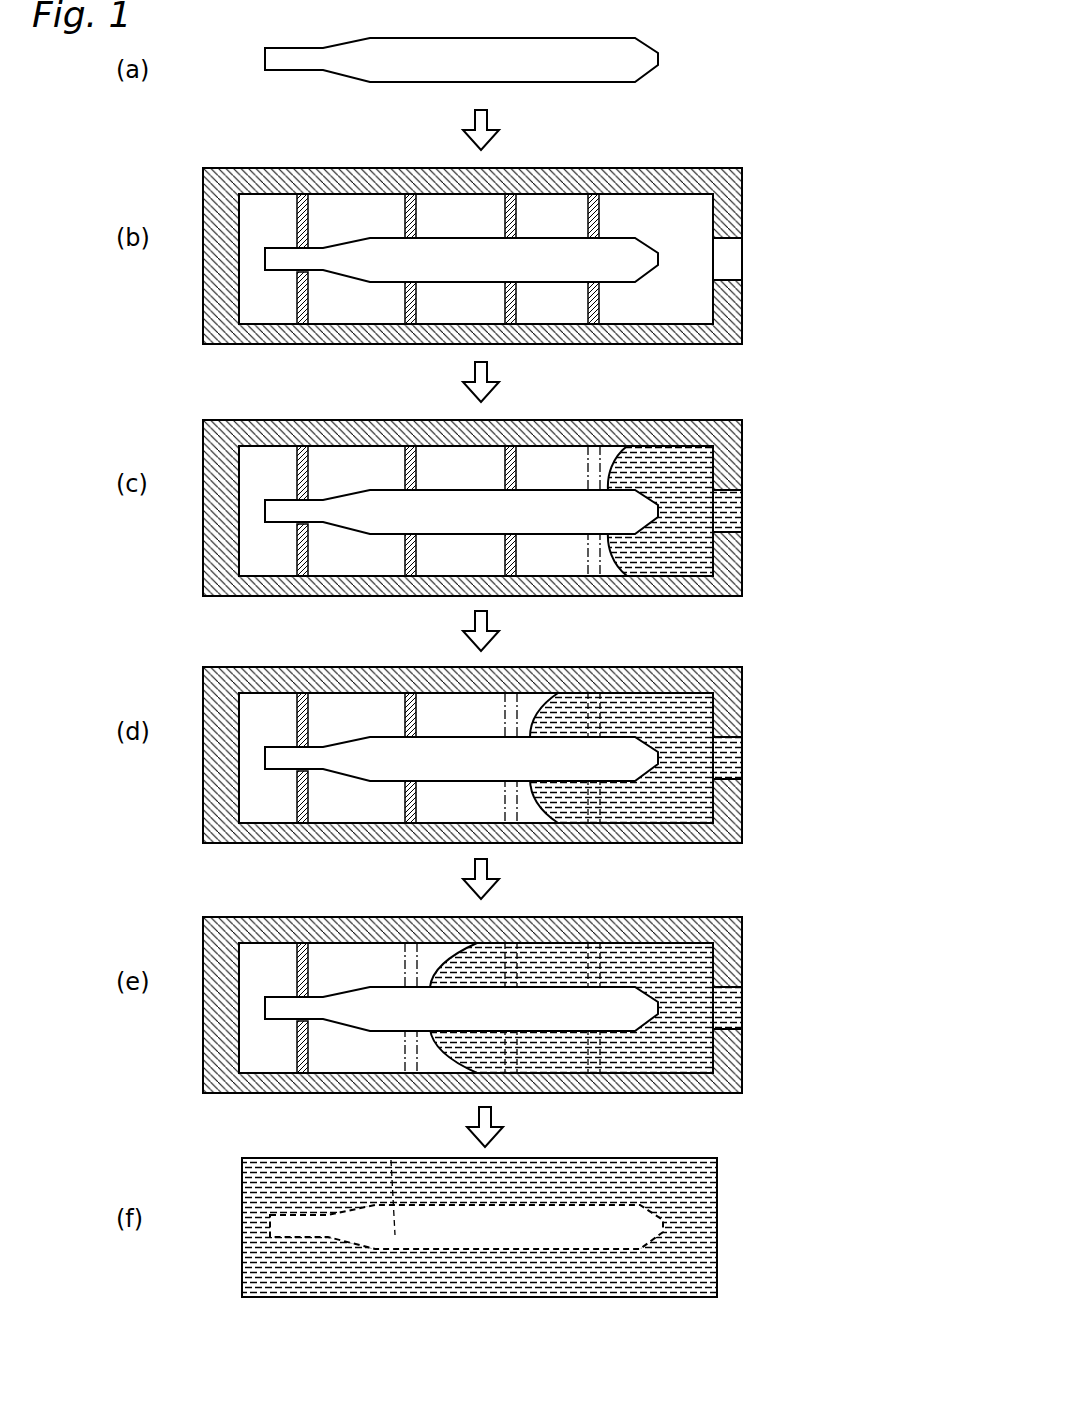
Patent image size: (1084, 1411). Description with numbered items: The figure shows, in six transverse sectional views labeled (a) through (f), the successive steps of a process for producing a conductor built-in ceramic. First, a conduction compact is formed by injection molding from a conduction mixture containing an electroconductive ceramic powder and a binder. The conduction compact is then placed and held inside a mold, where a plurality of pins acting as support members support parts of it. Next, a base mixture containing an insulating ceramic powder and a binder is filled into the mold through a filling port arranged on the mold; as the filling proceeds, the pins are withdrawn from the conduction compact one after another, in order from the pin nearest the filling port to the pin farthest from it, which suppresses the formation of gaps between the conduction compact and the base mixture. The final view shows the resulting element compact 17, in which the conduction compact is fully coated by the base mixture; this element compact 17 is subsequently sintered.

The element compact 17 is at (692, 1158).